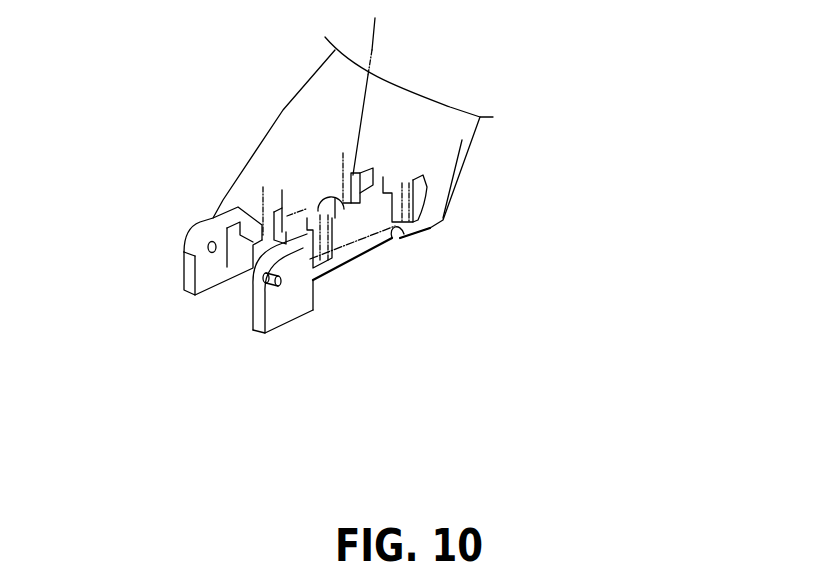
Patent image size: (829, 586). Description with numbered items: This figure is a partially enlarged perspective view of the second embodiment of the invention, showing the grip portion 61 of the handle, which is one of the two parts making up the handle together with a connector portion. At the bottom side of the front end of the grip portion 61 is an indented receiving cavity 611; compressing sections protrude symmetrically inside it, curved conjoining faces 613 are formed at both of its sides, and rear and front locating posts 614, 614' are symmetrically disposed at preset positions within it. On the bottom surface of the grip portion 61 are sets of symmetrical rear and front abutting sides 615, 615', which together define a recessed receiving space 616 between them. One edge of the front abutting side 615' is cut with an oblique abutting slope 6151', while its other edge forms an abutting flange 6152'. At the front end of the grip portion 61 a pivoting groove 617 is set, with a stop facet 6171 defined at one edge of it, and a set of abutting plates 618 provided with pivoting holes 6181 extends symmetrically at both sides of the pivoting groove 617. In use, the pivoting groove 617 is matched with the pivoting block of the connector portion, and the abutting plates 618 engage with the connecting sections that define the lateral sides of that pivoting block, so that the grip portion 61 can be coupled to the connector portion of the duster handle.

The grip portion 61 is at (490, 147).
The receiving cavity 611 is at (335, 212).
The curved conjoining faces 613 is at (443, 173).
The rear locating post 614 is at (441, 117).
The front locating post 614' is at (224, 142).
The rear abutting side 615 is at (509, 255).
The front abutting side 615' is at (301, 348).
The oblique abutting slope 6151' is at (364, 345).
The abutting flange 6152' is at (239, 360).
The recessed receiving space 616 is at (353, 263).
The pivoting groove 617 is at (237, 278).
The stop facet 6171 is at (195, 280).
The abutting plates 618 is at (212, 216).
The pivoting holes 6181 is at (205, 246).